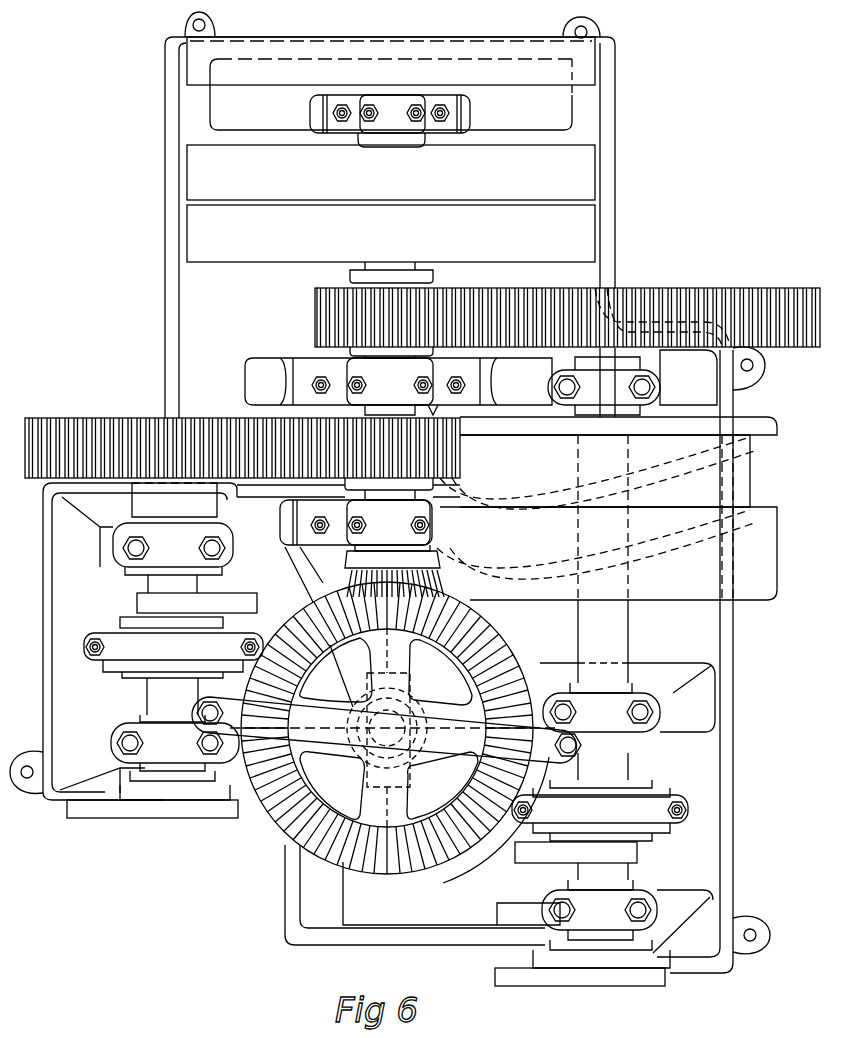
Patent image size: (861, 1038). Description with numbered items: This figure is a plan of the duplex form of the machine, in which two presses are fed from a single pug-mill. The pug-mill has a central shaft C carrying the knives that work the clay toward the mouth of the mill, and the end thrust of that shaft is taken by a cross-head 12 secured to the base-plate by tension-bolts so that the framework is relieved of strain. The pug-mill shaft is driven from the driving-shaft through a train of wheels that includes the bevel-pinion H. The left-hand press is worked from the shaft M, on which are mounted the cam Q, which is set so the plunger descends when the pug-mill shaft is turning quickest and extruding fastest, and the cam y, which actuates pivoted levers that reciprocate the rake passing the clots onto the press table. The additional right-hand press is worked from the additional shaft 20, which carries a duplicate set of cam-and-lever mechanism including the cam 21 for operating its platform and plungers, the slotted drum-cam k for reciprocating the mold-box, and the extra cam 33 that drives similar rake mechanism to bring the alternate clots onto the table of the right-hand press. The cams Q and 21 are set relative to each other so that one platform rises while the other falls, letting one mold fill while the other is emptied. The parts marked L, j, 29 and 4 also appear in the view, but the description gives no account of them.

The gear L is at (242, 426).
The block j is at (750, 470).
The drum-cam k is at (608, 553).
The cam y is at (233, 597).
The bevel-pinion H is at (410, 590).
The additional shaft 20 is at (603, 641).
The toothed wheel 29 is at (387, 728).
The bearing bar 4 is at (112, 663).
The shaft M is at (172, 696).
The cross-head 12 is at (386, 730).
The central shaft C is at (378, 740).
The cam Q is at (145, 818).
The extra cam 33 is at (627, 852).
The cam 21 is at (600, 978).